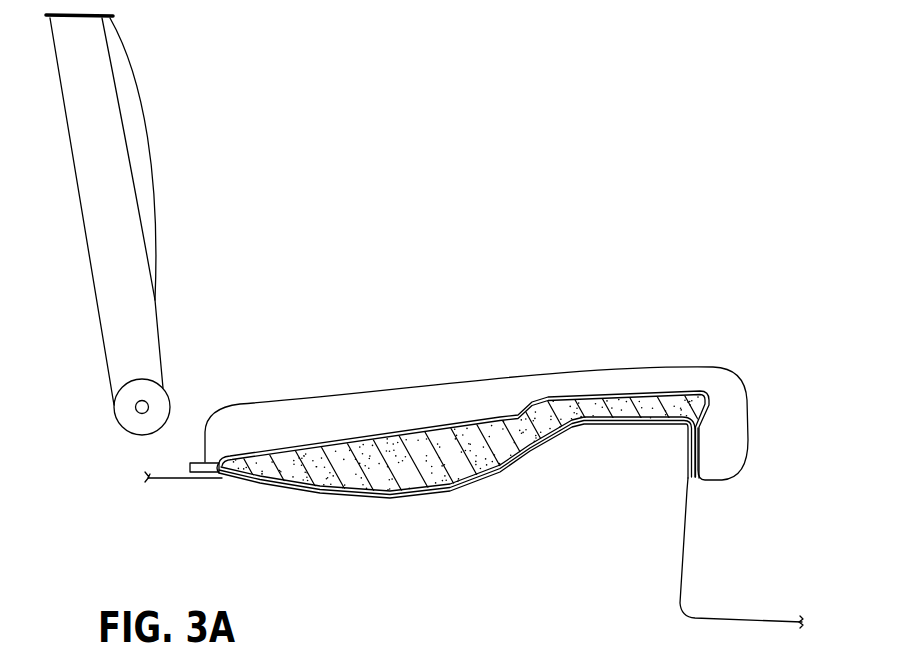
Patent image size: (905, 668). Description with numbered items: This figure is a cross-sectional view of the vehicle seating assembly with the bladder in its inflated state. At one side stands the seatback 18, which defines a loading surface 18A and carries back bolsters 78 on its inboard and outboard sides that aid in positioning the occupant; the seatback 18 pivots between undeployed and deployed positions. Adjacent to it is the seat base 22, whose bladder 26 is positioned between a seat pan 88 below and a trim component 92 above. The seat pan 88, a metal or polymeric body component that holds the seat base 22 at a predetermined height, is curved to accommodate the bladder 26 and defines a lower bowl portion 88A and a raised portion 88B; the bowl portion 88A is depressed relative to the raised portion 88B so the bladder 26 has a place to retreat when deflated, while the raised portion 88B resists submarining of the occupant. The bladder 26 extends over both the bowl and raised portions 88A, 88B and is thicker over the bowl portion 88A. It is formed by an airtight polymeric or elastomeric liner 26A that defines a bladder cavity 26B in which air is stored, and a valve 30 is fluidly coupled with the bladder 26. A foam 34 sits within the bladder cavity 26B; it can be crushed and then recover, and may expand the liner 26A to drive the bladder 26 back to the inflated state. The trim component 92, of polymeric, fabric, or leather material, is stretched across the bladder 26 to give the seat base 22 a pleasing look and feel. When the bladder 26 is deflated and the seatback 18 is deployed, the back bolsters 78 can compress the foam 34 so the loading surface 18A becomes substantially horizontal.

The seatback 18 is at (88, 118).
The loading surface 18A is at (79, 193).
The back bolsters 78 is at (137, 172).
The seat base 22 is at (769, 367).
The bladder 26 is at (540, 396).
The liner 26A is at (383, 435).
The bladder cavity 26B is at (473, 463).
The valve 30 is at (193, 472).
The foam 34 is at (358, 470).
The seat pan 88 is at (283, 489).
The bowl portion 88A is at (413, 500).
The raised portion 88B is at (605, 437).
The trim component 92 is at (725, 387).